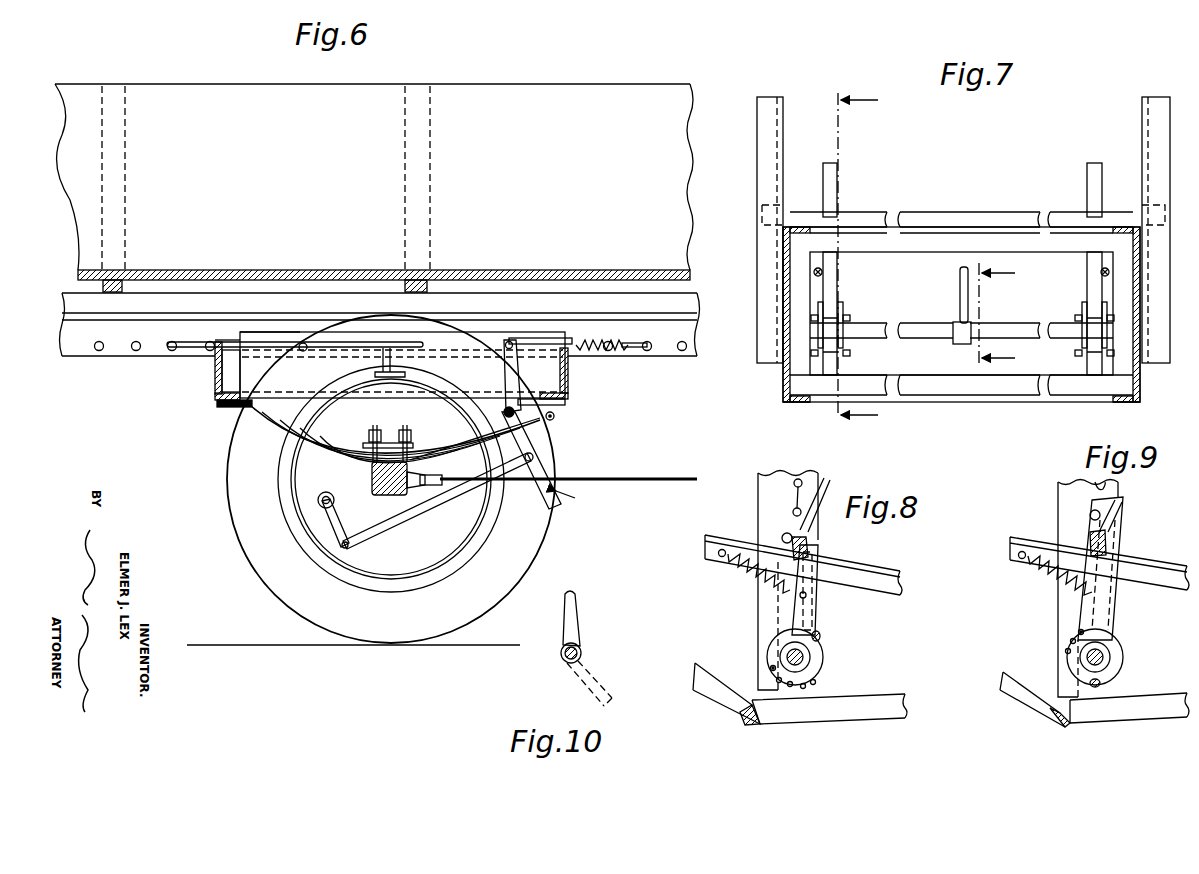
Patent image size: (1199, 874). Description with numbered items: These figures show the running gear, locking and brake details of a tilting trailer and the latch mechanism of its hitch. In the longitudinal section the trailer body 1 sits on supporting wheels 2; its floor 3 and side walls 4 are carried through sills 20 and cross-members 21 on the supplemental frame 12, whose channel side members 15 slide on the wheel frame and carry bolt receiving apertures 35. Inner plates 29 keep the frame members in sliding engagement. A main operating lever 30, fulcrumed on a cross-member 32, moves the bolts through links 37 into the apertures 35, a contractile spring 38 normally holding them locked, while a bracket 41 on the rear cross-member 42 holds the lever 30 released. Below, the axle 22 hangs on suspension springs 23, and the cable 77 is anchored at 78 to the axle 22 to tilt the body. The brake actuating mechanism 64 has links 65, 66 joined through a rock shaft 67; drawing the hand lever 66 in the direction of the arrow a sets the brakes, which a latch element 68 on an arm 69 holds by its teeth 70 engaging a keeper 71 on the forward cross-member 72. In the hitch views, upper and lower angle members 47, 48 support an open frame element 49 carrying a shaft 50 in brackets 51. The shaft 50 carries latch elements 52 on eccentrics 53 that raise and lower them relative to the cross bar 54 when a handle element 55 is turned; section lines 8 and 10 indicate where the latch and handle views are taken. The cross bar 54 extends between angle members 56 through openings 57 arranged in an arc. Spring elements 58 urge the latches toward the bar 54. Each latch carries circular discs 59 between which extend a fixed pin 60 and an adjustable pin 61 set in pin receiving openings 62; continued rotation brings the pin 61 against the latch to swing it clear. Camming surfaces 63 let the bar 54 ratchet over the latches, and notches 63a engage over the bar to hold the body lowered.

In FIG. 6, the trailer body 1 is at (75, 347).
In FIG. 6, the supporting wheels 2 is at (240, 553).
In FIG. 6, the bottom wall or floor 3 is at (350, 331).
In FIG. 6, the side walls 4 is at (198, 95).
In FIG. 7, the section line 8— 8 is at (848, 258).
In FIG. 7, the section line 10— 10 is at (1009, 315).
In FIG. 6, the supplemental frame 12 is at (683, 360).
In FIG. 6, the side members 15 is at (80, 357).
In FIG. 6, the sills 20 is at (493, 303).
In FIG. 6, the cross-members 21 is at (118, 283).
In FIG. 6, the axle 22 is at (372, 477).
In FIG. 6, the suspension springs 23 is at (320, 438).
In FIG. 6, the inner plates 29 is at (265, 331).
In FIG. 6, the main operating lever 30 is at (185, 352).
In FIG. 6, the cross-member 32 is at (378, 373).
In FIG. 6, the bolt receiving apertures 35 is at (136, 352).
In FIG. 6, the links 37 is at (395, 343).
In FIG. 6, the contractile spring 38 is at (303, 351).
In FIG. 6, the bracket 41 is at (215, 340).
In FIG. 6, the cross-member 42 is at (215, 396).
In FIG. 7, the upper angle members 47 is at (783, 237).
In FIG. 8, the upper angle members 47 is at (900, 582).
In FIG. 9, the upper angle members 47 is at (1010, 555).
In FIG. 7, the lower angle members 48 is at (783, 392).
In FIG. 8, the lower angle members 48 is at (906, 695).
In FIG. 9, the lower angle members 48 is at (1003, 682).
In FIG. 7, the open frame element 49 is at (968, 392).
In FIG. 8, the open frame element 49 is at (756, 725).
In FIG. 9, the open frame element 49 is at (1062, 726).
In FIG. 7, the shaft 50 is at (918, 338).
In FIG. 8, the shaft 50 is at (787, 655).
In FIG. 9, the shaft 50 is at (1103, 657).
In FIG. 10, the shaft 50 is at (581, 654).
In FIG. 8, the brackets 51 is at (794, 485).
In FIG. 7, the latch elements 52 is at (837, 296).
In FIG. 8, the latch elements 52 is at (818, 608).
In FIG. 9, the latch elements 52 is at (1116, 608).
In FIG. 8, the eccentrics 53 is at (810, 661).
In FIG. 9, the eccentrics 53 is at (1108, 652).
In FIG. 7, the cross bar 54 is at (880, 212).
In FIG. 8, the cross bar 54 is at (808, 542).
In FIG. 9, the cross bar 54 is at (1090, 540).
In FIG. 7, the handle element 55 is at (958, 285).
In FIG. 10, the handle element 55 is at (578, 612).
In FIG. 7, the angle members 56 is at (783, 162).
In FIG. 8, the angle members 56 is at (758, 484).
In FIG. 9, the angle members 56 is at (1058, 494).
In FIG. 9, the openings 57 is at (1095, 484).
In FIG. 7, the spring elements 58 is at (814, 273).
In FIG. 8, the spring elements 58 is at (752, 575).
In FIG. 9, the spring elements 58 is at (1050, 578).
In FIG. 7, the circular discs 59 is at (840, 305).
In FIG. 8, the circular discs 59 is at (824, 655).
In FIG. 9, the circular discs 59 is at (1068, 668).
In FIG. 7, the pin 60 is at (850, 318).
In FIG. 8, the pin 60 is at (820, 635).
In FIG. 9, the pin 60 is at (1101, 683).
In FIG. 7, the pin 61 is at (845, 356).
In FIG. 8, the pin 61 is at (773, 670).
In FIG. 9, the pin 61 is at (1078, 632).
In FIG. 8, the pin receiving openings 62 is at (813, 684).
In FIG. 9, the pin receiving openings 62 is at (1070, 642).
In FIG. 8, the inclined or camming surfaces 63 is at (822, 498).
In FIG. 9, the inclined or camming surfaces 63 is at (1120, 500).
In FIG. 8, the notches 63a is at (783, 536).
In FIG. 9, the notches 63a is at (1095, 513).
In FIG. 6, the brake actuating mechanism 64 is at (397, 535).
In FIG. 6, the link 65 is at (414, 503).
In FIG. 6, the link 66 is at (540, 447).
In FIG. 6, the rock shaft 67 is at (470, 432).
In FIG. 6, the latch element 68 is at (630, 350).
In FIG. 6, the arm 69 is at (503, 378).
In FIG. 6, the teeth 70 is at (592, 352).
In FIG. 6, the keeper 71 is at (565, 338).
In FIG. 6, the forward cross-member 72 is at (566, 396).
In FIG. 6, the cable 77 is at (625, 477).
In FIG. 6, the anchorage 78 is at (382, 486).
In FIG. 6, the arrow a is at (587, 510).